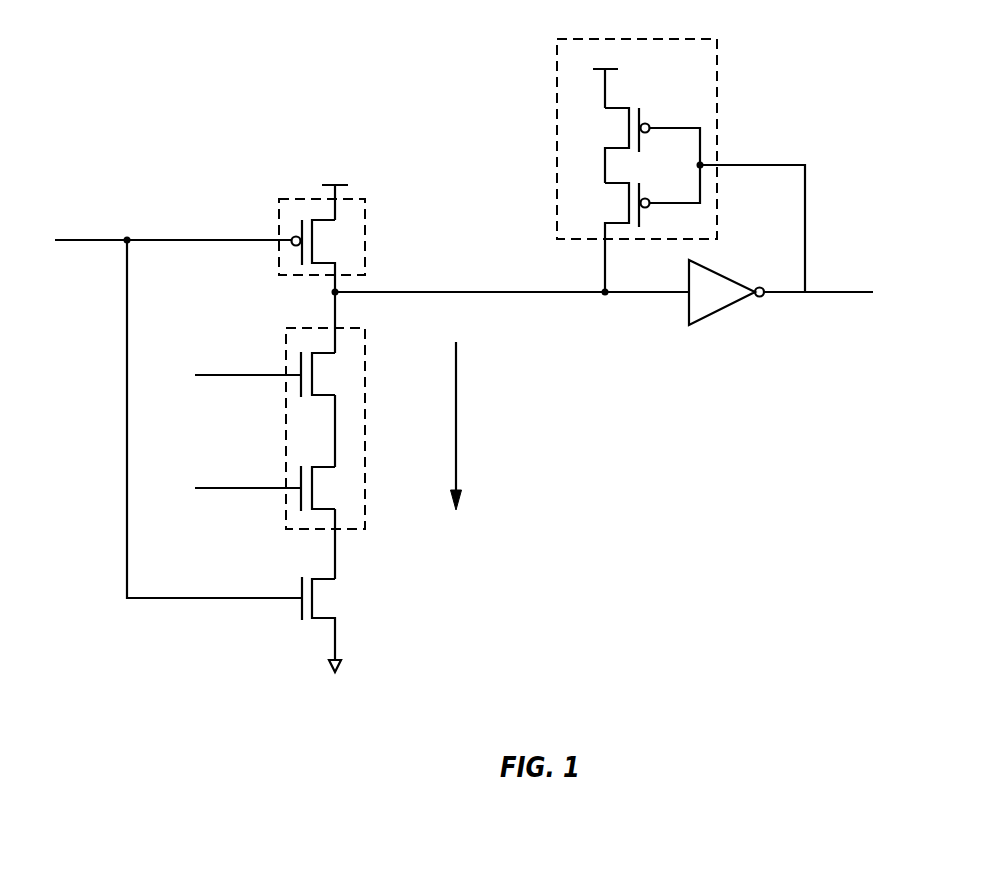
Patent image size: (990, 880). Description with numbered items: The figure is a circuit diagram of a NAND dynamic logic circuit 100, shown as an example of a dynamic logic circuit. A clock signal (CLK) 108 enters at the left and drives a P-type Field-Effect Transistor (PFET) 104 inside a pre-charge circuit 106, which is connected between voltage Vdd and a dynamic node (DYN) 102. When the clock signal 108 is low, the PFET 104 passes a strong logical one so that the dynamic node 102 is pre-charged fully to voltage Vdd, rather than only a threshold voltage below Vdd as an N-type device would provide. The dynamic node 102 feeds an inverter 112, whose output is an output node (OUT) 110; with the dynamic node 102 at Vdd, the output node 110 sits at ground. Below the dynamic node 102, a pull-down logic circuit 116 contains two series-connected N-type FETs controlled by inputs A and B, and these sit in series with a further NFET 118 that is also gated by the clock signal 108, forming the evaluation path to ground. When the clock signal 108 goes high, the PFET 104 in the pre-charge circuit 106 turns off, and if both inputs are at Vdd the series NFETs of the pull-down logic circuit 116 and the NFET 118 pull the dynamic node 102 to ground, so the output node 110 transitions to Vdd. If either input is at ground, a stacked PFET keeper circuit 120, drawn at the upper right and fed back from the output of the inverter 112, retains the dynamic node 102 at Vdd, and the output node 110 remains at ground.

The NAND dynamic logic circuit 100 is at (190, 85).
The dynamic node (DYN) 102 is at (510, 292).
The P-type Field-Effect Transistor (PFET) 104 is at (308, 203).
The pre-charge circuit 106 is at (365, 225).
The clock signal (CLK) 108 is at (178, 406).
The output node (OUT) 110 is at (848, 292).
The inverter 112 is at (728, 300).
The pull-down logic circuit 116 is at (365, 522).
The NFET 118 is at (310, 641).
The stacked PFET keeper circuit 120 is at (717, 90).